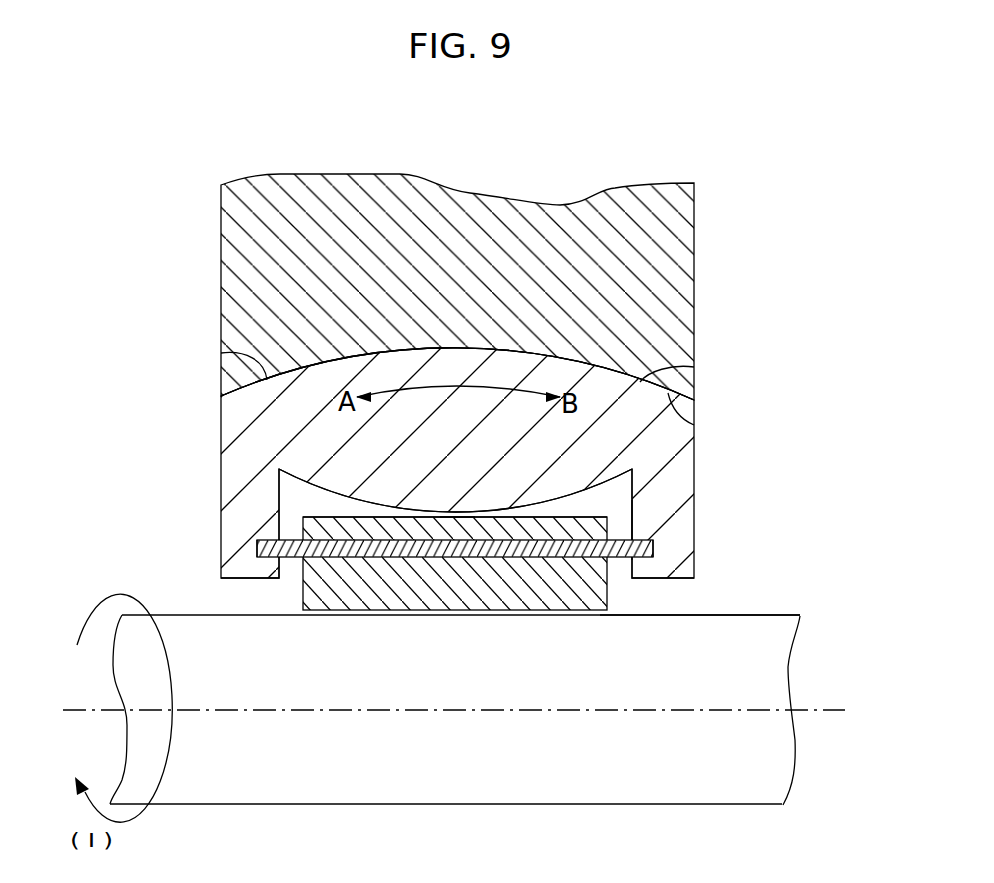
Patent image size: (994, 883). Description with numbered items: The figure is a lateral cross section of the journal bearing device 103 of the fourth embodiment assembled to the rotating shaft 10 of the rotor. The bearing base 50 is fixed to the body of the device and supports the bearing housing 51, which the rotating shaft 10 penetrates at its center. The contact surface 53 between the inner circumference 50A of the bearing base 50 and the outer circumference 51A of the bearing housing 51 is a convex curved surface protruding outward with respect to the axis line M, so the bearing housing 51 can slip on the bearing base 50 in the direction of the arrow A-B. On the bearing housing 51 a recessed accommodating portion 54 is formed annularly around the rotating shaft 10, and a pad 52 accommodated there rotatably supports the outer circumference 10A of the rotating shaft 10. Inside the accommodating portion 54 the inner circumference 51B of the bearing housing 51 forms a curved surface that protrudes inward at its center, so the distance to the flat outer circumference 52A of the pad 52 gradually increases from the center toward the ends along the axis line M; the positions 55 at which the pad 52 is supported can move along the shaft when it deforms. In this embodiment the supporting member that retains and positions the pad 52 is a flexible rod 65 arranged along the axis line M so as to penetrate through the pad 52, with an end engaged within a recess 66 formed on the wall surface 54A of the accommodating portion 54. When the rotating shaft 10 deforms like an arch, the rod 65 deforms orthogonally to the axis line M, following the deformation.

The journal bearing device 103 is at (690, 150).
The bearing base 50 is at (683, 282).
The inner circumference of the bearing base 50A is at (694, 425).
The bearing housing 51 is at (227, 430).
The outer circumference of the bearing housing 51A is at (694, 367).
The inner circumference of the bearing housing 51B is at (605, 484).
The contact surface 53 is at (221, 353).
The accommodating portion 54 is at (285, 487).
The wall surface of the accommodating portion 54A is at (626, 517).
The pad 52 is at (322, 597).
The outer circumference of the pad 52A is at (620, 517).
The positions at which the pads are supported 55 is at (457, 517).
The rod 65 is at (285, 546).
The recess 66 is at (285, 556).
The rotating shaft 10 is at (758, 668).
The outer circumference of the rotating shaft 10A is at (737, 615).
The axis line M is at (467, 713).